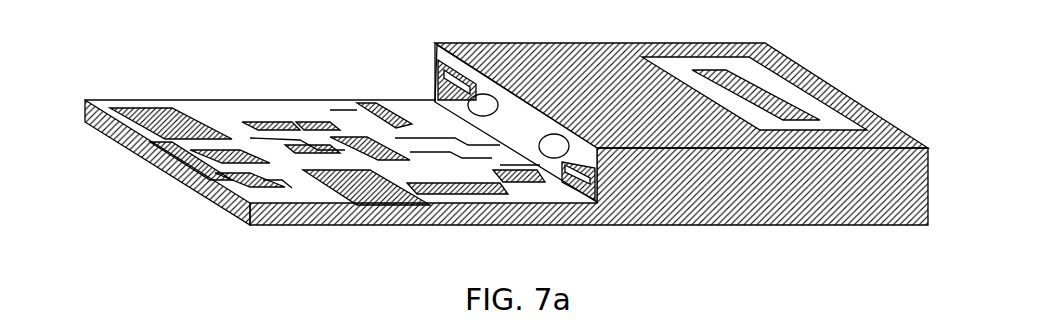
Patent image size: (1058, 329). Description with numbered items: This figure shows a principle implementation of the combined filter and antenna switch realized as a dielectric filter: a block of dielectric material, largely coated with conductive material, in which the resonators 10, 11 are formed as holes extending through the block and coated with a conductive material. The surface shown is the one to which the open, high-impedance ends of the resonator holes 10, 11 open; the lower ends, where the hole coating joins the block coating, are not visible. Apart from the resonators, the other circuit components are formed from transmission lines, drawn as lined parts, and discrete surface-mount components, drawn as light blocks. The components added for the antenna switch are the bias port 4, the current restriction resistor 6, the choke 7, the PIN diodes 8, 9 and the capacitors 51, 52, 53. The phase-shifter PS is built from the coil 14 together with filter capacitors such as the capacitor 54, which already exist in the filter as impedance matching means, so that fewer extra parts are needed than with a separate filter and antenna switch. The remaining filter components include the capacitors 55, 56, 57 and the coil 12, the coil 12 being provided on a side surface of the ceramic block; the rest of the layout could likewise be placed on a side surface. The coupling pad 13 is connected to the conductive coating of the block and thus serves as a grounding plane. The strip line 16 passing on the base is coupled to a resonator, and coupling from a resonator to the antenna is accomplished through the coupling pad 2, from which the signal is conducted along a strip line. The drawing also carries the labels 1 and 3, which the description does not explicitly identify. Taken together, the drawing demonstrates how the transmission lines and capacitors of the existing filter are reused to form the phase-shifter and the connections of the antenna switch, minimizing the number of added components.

The substrate plate 1 is at (147, 100).
The coupling pad 2 is at (595, 183).
The conductor trace 3 is at (500, 205).
The bias port 4 is at (295, 226).
The current restriction resistor 6 is at (216, 205).
The choke 7 is at (188, 183).
The PIN diode 8 is at (262, 143).
The PIN diode 9 is at (448, 152).
The resonator 10 is at (560, 210).
The resonator 11 is at (486, 103).
The coil 12 is at (772, 94).
The coupling pad 13 is at (405, 203).
The coil 14 is at (363, 132).
The strip line 16 is at (395, 105).
The capacitor 51 is at (338, 224).
The capacitor 52 is at (152, 162).
The capacitor 53 is at (528, 198).
The capacitor 54 is at (397, 213).
The capacitor 55 is at (287, 118).
The capacitor 56 is at (436, 68).
The capacitor 57 is at (593, 122).